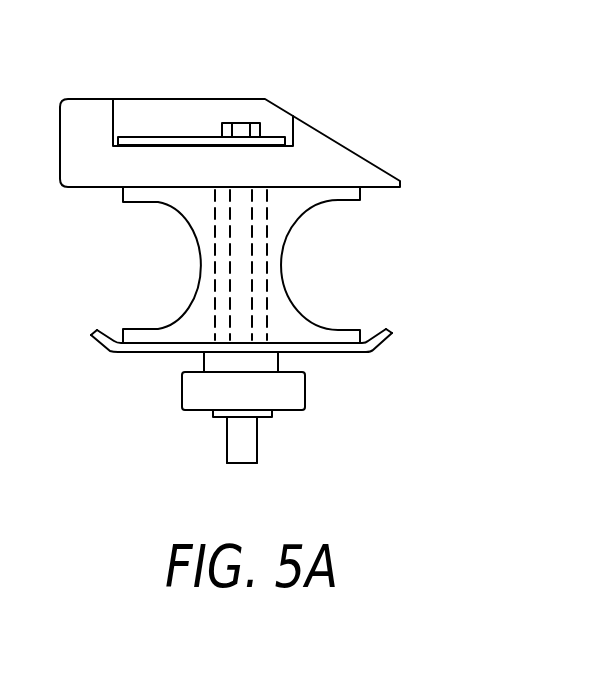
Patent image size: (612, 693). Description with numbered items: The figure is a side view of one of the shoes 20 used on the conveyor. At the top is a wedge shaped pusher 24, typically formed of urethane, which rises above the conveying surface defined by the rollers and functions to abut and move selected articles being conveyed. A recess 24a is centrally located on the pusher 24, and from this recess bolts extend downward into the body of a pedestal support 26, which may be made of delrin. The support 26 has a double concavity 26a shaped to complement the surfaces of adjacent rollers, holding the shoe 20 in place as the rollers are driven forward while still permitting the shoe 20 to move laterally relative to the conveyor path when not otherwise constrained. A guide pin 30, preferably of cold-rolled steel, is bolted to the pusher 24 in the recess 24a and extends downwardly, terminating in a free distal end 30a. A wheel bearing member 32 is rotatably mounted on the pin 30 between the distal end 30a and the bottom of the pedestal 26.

The shoe 20 is at (373, 84).
The wedge shaped pusher 24 is at (233, 99).
The recess 24a is at (157, 99).
The pedestal support 26 is at (280, 265).
The double concavity 26a is at (384, 278).
The wheel bearing member 32 is at (290, 392).
The guide pin 30 is at (250, 438).
The free distal end 30a is at (243, 463).